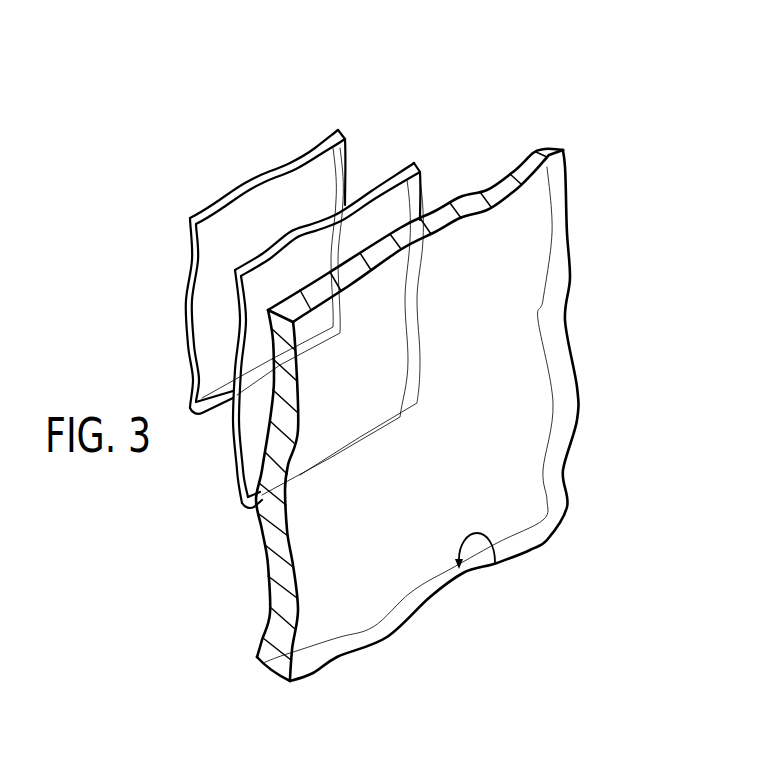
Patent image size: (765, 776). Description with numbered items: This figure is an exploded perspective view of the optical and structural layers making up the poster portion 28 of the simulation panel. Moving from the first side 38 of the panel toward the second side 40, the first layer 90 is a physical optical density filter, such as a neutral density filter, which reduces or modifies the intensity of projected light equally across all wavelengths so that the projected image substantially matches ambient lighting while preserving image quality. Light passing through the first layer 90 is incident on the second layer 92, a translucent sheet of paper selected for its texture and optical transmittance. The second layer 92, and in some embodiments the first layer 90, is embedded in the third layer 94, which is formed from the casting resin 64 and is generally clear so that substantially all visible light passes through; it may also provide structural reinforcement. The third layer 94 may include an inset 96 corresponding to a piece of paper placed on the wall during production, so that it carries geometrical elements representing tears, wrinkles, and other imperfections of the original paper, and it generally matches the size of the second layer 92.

The poster portion 28 is at (476, 64).
The first side 38 is at (192, 145).
The second side 40 is at (622, 529).
The casting resin 64 is at (535, 153).
The first layer 90 is at (327, 138).
The second layer 92 is at (400, 168).
The third layer 94 is at (570, 277).
The inset 96 is at (495, 562).